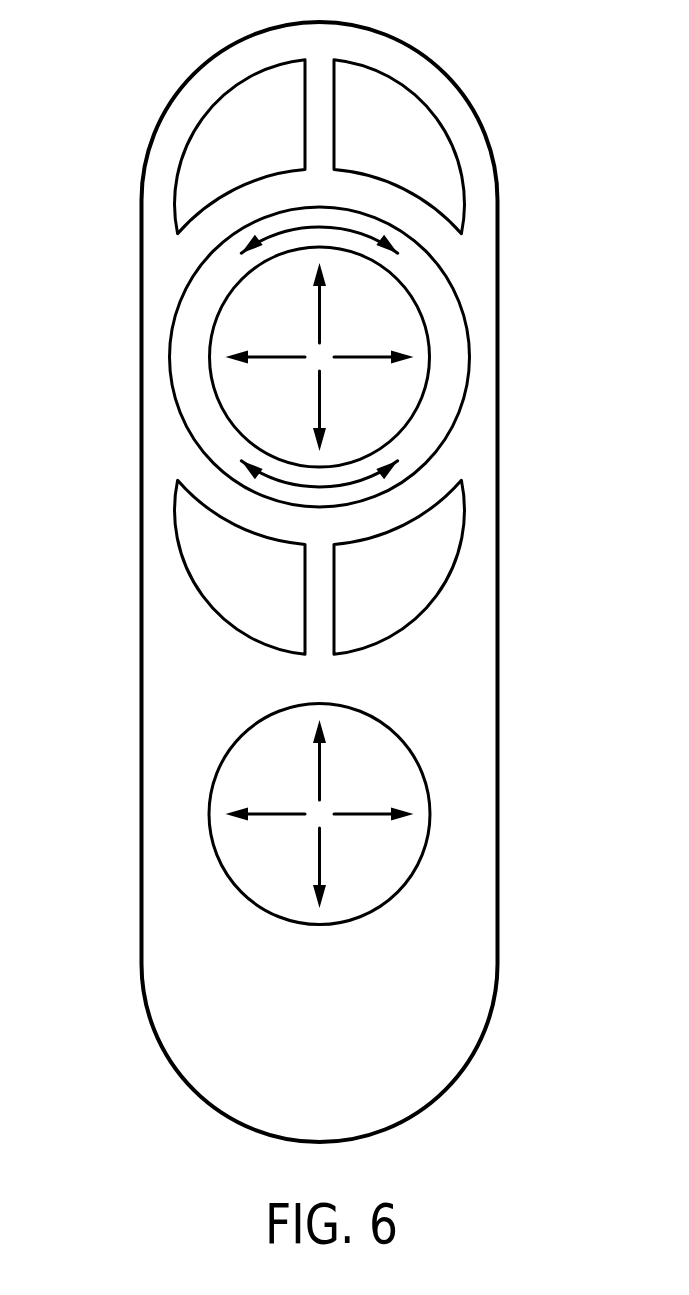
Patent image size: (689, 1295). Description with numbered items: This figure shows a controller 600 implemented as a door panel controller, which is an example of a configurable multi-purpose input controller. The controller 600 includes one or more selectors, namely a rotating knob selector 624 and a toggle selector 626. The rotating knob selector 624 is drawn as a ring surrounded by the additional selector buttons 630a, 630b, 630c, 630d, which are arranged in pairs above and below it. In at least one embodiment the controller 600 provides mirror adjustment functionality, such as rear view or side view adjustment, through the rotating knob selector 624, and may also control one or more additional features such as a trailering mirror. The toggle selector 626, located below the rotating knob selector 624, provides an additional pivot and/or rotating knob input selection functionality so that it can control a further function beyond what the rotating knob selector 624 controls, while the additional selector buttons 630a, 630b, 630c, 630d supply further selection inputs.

The controller 600 is at (222, 110).
The rotating knob selector 624 is at (175, 319).
The toggle selector 626 is at (211, 800).
The additional selector button 630a is at (190, 156).
The additional selector button 630b is at (193, 560).
The additional selector button 630c is at (446, 560).
The additional selector button 630d is at (417, 110).